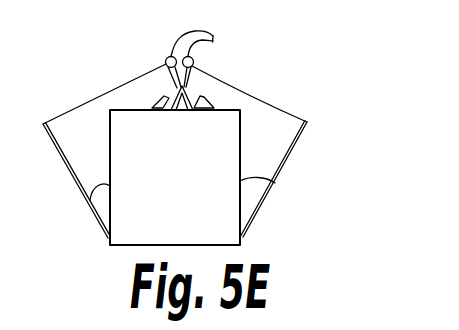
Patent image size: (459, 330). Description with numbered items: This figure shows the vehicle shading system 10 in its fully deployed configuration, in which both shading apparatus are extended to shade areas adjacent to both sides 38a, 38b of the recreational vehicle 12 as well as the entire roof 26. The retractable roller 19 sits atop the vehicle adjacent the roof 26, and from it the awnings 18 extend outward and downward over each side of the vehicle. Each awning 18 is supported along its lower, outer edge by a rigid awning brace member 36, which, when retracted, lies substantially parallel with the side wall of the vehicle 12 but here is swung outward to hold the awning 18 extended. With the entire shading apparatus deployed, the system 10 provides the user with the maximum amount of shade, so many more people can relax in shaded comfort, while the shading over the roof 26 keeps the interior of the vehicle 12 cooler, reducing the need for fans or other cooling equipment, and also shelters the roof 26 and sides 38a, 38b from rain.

The vehicle shading system 10 is at (378, 89).
The recreational vehicle 12 is at (133, 226).
The awning 18 is at (123, 90).
The retractable roller 19 is at (196, 66).
The roof 26 is at (143, 98).
The rigid awning brace member 36 is at (60, 157).
The side 38a is at (92, 198).
The side 38b is at (275, 183).